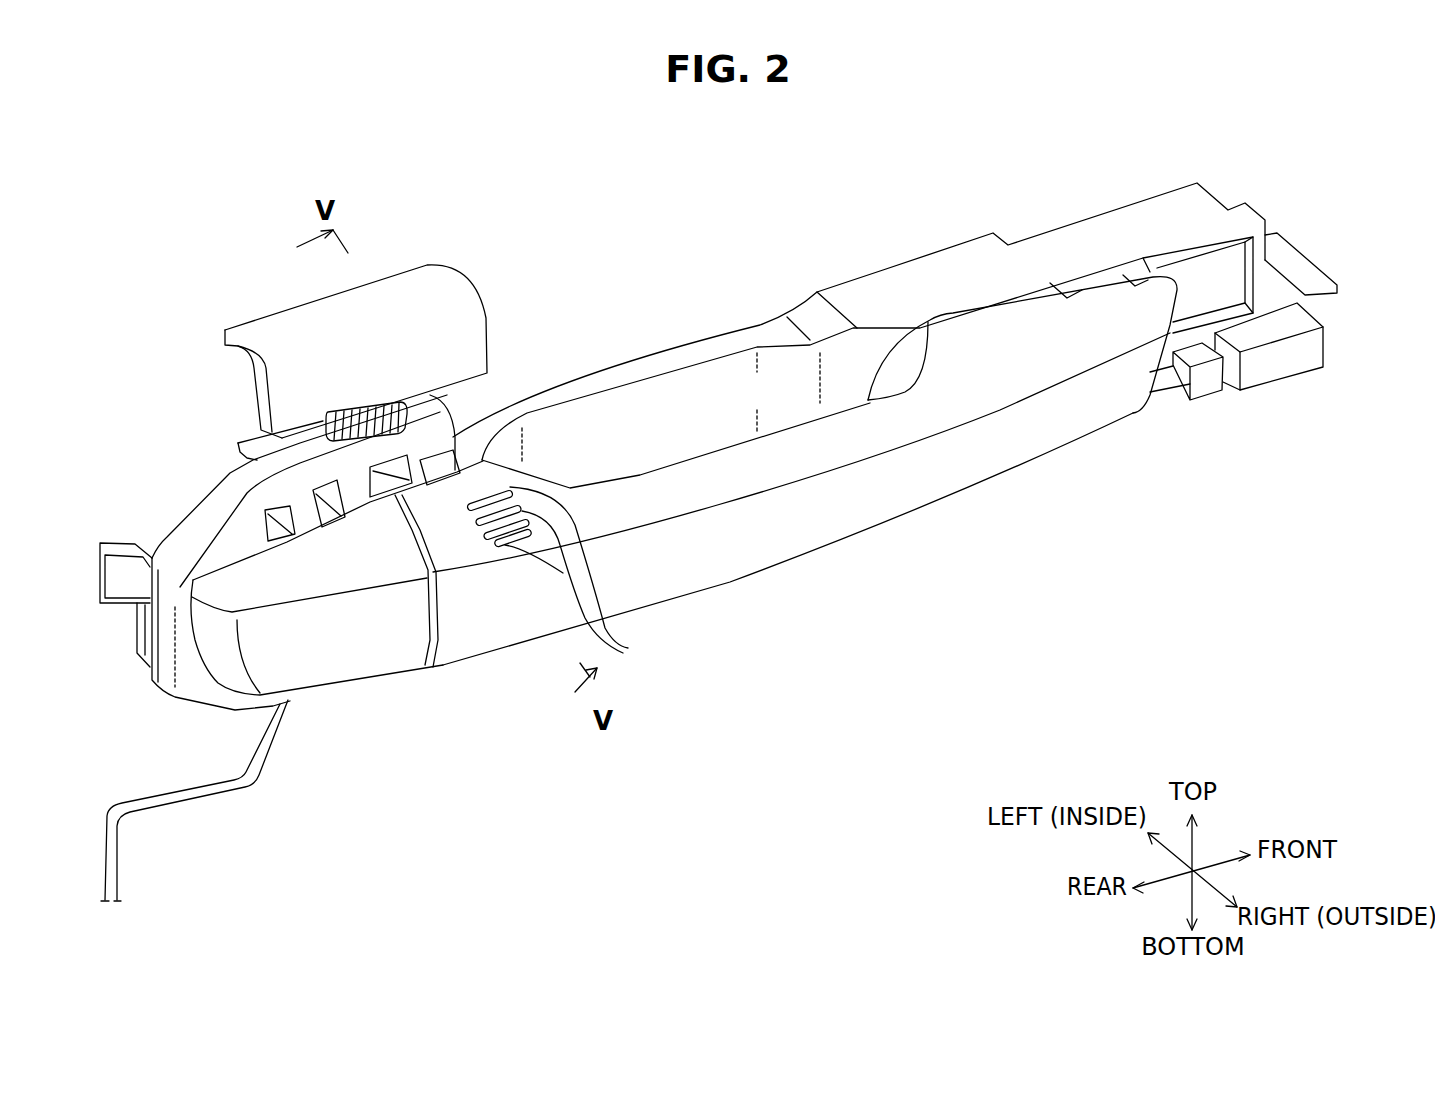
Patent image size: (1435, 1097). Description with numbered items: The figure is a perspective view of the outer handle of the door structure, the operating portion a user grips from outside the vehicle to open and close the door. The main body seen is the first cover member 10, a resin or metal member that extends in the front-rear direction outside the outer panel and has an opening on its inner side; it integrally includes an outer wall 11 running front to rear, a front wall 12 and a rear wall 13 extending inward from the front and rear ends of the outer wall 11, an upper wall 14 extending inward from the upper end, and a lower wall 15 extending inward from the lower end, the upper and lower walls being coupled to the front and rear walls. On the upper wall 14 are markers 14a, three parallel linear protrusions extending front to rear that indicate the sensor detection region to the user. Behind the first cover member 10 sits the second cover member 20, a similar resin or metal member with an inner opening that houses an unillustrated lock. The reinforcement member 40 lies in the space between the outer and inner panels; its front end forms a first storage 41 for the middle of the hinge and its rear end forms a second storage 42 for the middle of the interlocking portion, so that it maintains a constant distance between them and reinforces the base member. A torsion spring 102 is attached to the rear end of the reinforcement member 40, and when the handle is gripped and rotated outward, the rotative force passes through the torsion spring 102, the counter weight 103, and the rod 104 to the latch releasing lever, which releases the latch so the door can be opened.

The first cover member 10 is at (757, 515).
The outer wall 11 is at (955, 470).
The front wall 12 is at (1197, 348).
The rear wall 13 is at (432, 667).
The upper wall 14 is at (810, 460).
The markers 14a is at (626, 651).
The lower wall 15 is at (757, 577).
The second cover member 20 is at (362, 715).
The reinforcement member 40 is at (795, 205).
The first storage 41 is at (1175, 200).
The second storage 42 is at (423, 407).
The torsion spring 102 is at (253, 410).
The counter weight 103 is at (403, 287).
The rod 104 is at (190, 796).